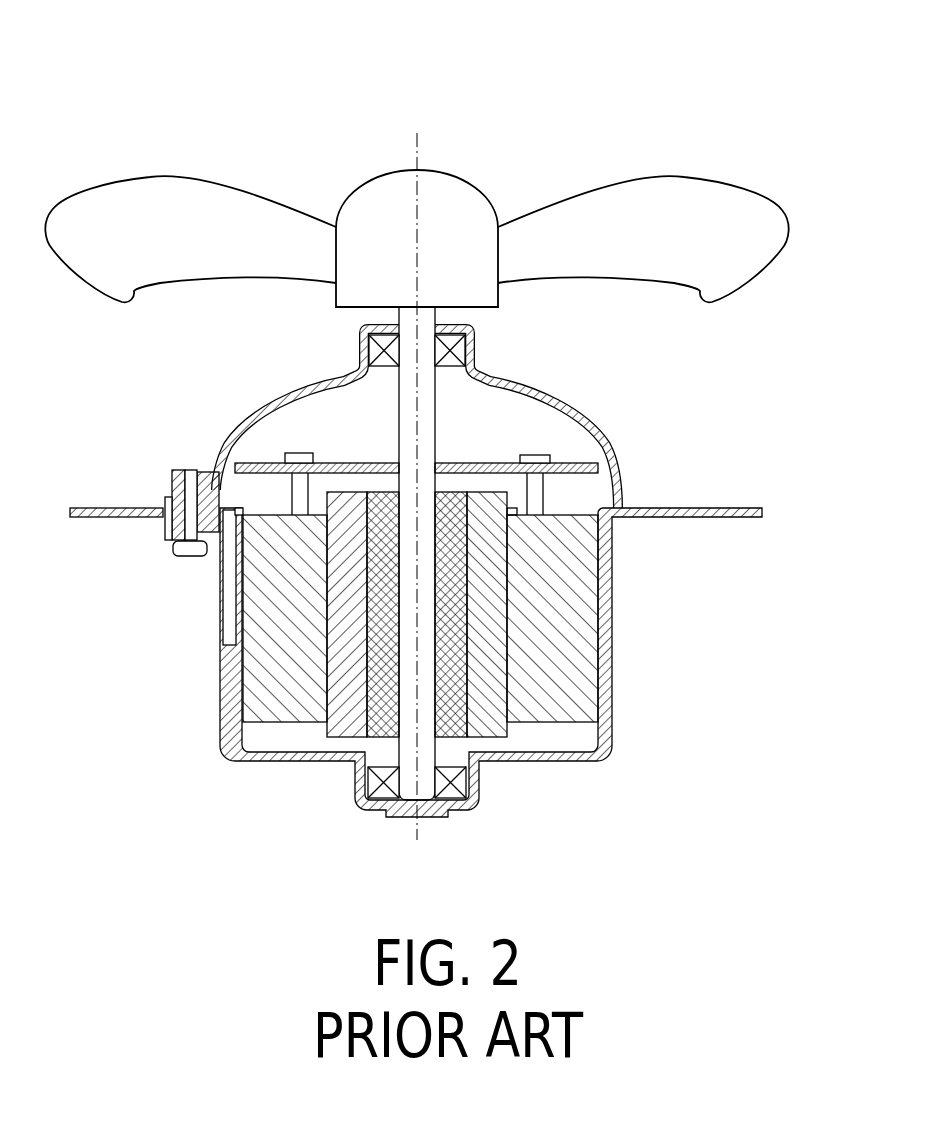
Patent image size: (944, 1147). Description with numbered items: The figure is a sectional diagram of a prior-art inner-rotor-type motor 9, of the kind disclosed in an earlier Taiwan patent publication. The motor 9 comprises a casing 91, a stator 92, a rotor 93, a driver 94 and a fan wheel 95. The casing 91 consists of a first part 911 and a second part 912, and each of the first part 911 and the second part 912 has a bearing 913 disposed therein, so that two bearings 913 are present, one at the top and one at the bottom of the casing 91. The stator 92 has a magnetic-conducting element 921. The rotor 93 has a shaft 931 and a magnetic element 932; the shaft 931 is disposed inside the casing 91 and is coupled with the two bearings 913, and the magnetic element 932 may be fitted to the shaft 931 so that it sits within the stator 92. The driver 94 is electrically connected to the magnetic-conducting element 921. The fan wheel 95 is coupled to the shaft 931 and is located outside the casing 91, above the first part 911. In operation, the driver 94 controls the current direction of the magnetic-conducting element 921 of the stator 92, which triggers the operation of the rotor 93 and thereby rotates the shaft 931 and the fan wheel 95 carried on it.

The inner-rotor-type motor 9 is at (754, 116).
The casing 91 is at (629, 422).
The first part 911 is at (621, 452).
The second part 912 is at (611, 623).
The bearing 913 is at (448, 333).
The stator 92 is at (245, 495).
The magnetic-conducting element 921 is at (252, 608).
The rotor 93 is at (360, 490).
The shaft 931 is at (407, 398).
The magnetic element 932 is at (340, 672).
The driver 94 is at (270, 468).
The fan wheel 95 is at (622, 195).